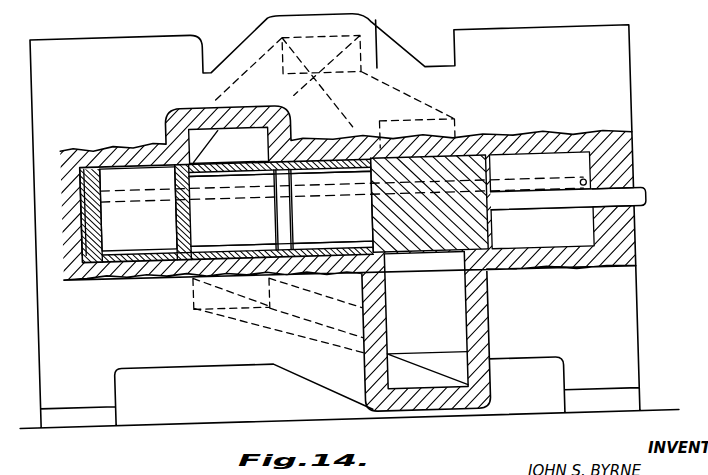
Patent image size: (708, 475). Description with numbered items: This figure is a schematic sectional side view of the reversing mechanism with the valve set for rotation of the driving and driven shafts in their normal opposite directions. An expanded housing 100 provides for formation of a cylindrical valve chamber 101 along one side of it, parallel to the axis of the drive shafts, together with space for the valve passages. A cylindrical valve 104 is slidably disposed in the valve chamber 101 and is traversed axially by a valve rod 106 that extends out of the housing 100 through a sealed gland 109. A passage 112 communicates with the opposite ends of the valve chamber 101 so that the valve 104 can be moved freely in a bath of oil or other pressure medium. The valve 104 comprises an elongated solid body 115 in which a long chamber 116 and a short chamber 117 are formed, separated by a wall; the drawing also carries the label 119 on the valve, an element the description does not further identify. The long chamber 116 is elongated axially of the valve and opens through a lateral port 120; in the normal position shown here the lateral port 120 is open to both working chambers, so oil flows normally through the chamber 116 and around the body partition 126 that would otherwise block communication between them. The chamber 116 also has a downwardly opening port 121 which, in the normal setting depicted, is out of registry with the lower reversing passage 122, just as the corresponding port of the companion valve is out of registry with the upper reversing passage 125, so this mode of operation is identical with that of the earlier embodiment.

The housing 100 is at (129, 42).
The valve chamber 101 is at (545, 166).
The cylindrical valve 104 is at (478, 182).
The valve rod 106 is at (642, 217).
The sealed gland 109 is at (614, 224).
The passage 112 is at (583, 197).
The solid body 115 is at (487, 243).
The long chamber 116 is at (218, 254).
The short chamber 117 is at (146, 252).
The partition liner 119 is at (183, 220).
The lateral port 120 is at (262, 181).
The downwardly opening port 121 is at (316, 259).
The lower reversing passage 122 is at (433, 323).
The upper reversing passage 125 is at (243, 32).
The body partition 126 is at (285, 216).